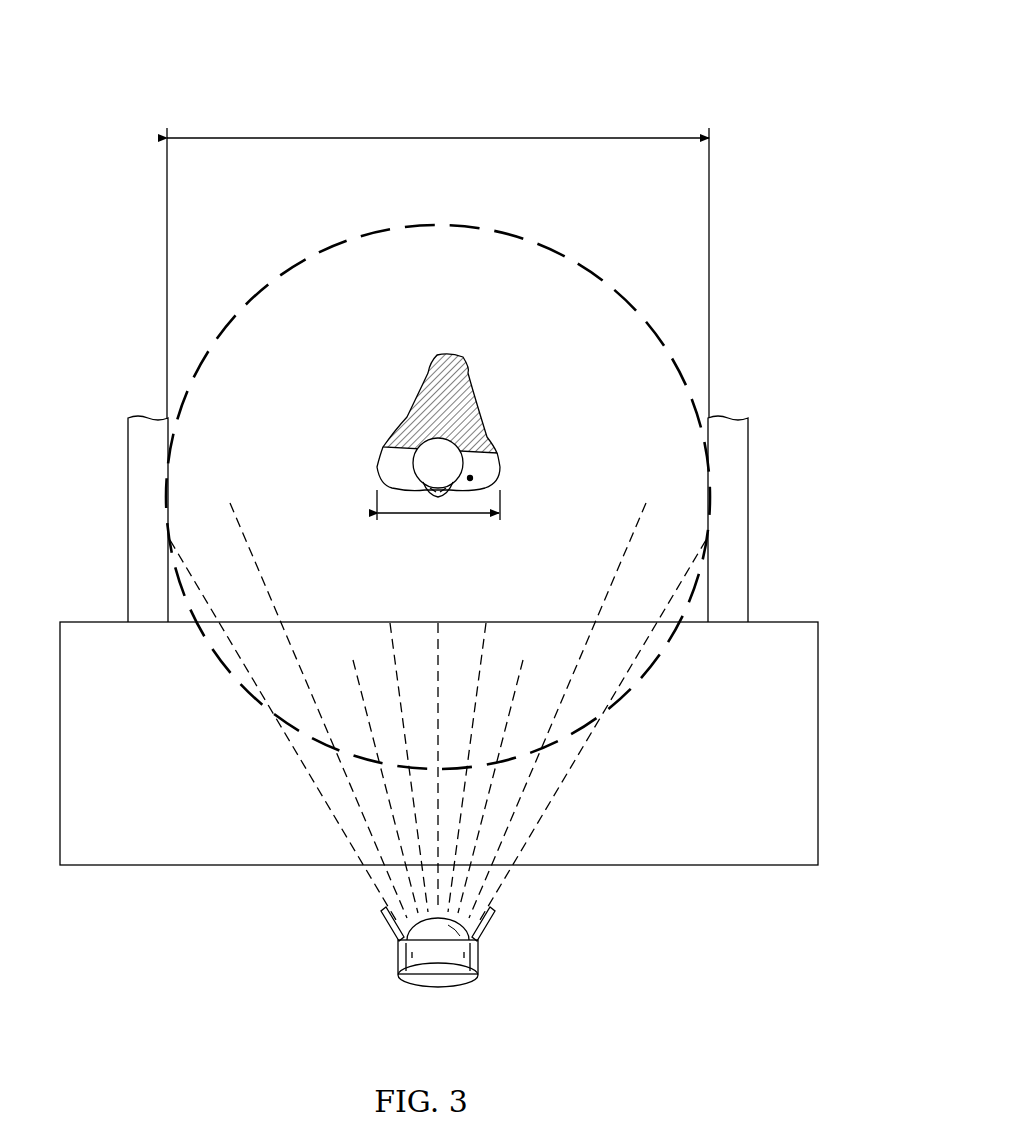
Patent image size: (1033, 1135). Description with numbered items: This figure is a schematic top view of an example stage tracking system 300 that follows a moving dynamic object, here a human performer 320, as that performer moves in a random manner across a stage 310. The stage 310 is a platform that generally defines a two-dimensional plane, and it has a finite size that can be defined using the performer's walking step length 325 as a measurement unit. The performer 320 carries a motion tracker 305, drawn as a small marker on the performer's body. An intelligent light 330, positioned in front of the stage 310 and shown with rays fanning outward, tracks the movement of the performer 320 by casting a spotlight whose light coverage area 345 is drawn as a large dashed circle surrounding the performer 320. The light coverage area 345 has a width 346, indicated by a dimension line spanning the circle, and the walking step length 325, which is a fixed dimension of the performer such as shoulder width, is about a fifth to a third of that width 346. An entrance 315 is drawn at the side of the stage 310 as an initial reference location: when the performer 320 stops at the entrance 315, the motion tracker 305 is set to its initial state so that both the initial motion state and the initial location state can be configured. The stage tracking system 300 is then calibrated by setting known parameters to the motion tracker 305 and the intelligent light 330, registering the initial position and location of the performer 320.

The stage tracking system 300 is at (588, 51).
The motion tracker 305 is at (497, 470).
The stage 310 is at (640, 865).
The entrance 315 is at (750, 460).
The performer 320 is at (377, 466).
The walking step length 325 is at (437, 515).
The intelligent light 330 is at (437, 986).
The light coverage area 345 is at (436, 225).
The width 346 is at (437, 137).